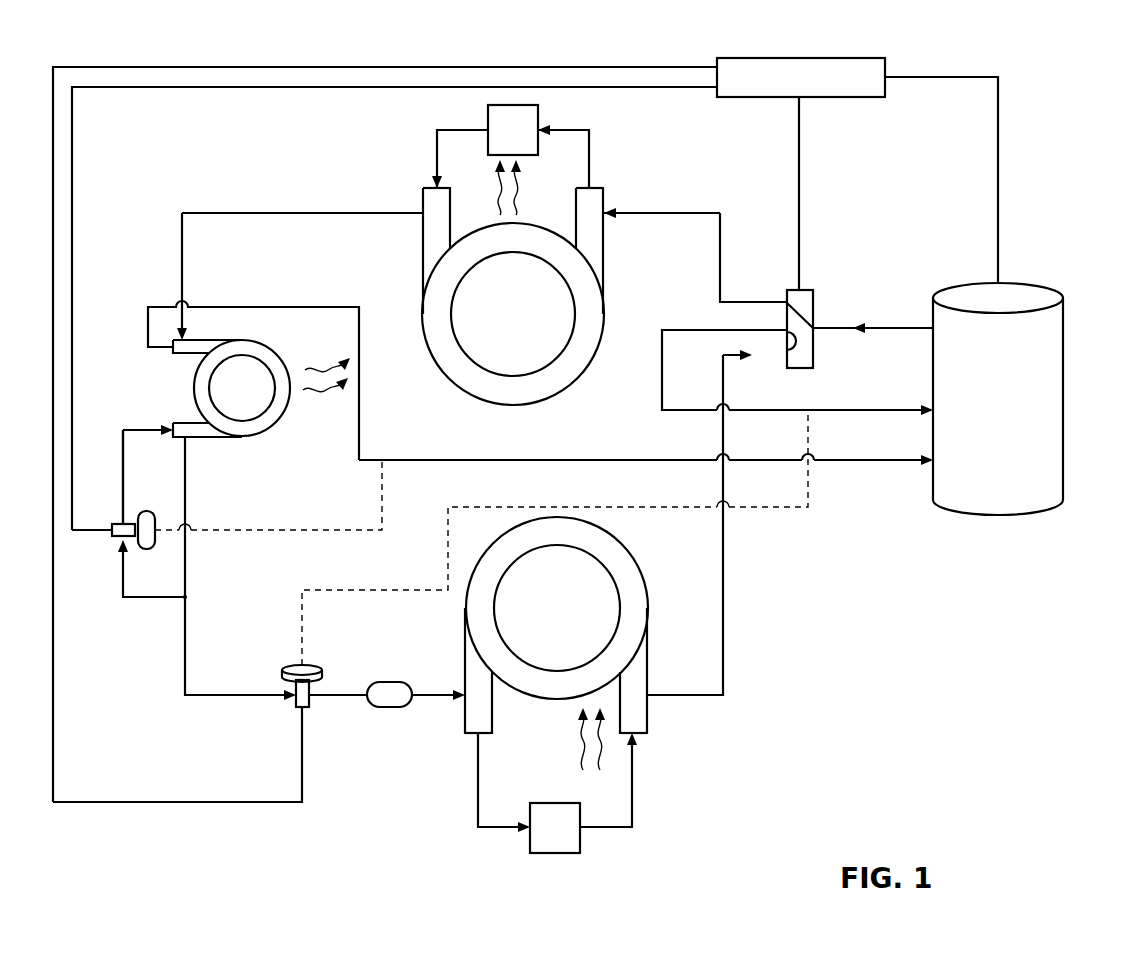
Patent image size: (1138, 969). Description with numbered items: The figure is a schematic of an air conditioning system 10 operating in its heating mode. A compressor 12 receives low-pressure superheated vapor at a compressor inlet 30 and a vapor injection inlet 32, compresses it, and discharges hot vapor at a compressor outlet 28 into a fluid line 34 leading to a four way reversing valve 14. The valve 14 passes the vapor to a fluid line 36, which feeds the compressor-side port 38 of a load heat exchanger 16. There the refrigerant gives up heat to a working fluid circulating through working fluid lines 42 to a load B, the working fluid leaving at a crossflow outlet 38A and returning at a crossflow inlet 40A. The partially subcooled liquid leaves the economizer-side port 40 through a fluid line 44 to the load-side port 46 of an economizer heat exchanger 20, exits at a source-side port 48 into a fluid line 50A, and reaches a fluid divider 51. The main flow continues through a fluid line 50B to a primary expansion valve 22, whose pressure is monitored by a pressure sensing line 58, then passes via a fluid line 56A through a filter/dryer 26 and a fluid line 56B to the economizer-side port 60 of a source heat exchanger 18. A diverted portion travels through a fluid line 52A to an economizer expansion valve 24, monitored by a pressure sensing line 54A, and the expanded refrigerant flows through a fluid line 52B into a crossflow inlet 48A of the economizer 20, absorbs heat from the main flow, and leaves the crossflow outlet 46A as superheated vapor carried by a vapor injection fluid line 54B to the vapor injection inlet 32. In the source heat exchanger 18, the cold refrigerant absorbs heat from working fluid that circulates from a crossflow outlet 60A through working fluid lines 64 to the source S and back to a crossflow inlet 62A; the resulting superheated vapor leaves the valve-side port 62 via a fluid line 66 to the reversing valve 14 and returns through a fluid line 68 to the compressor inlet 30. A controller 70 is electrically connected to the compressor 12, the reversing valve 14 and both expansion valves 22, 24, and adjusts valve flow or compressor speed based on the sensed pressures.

The air conditioning system 10 is at (1040, 75).
The compressor 12 is at (1060, 398).
The four way reversing valve 14 is at (805, 302).
The load heat exchanger 16 is at (604, 200).
The source heat exchanger 18 is at (560, 675).
The economizer heat exchanger 20 is at (250, 405).
The primary expansion valve 22 is at (300, 712).
The economizer expansion valve 24 is at (105, 537).
The filter/dryer 26 is at (392, 705).
The compressor outlet 28 is at (933, 336).
The compressor inlet 30 is at (933, 408).
The vapor injection inlet 32 is at (933, 466).
The fluid line 34 is at (890, 325).
The fluid line 36 is at (720, 238).
The compressor-side port 38 is at (606, 222).
The crossflow outlet 38A is at (590, 185).
The economizer-side port 40 is at (422, 215).
The crossflow inlet 40A is at (430, 188).
The working fluid lines 42 is at (572, 128).
The fluid line 44 is at (300, 213).
The load-side port 46 is at (186, 339).
The crossflow outlet 46A is at (173, 348).
The source-side port 48 is at (195, 440).
The crossflow inlet 48A is at (170, 440).
The fluid line 50A is at (190, 482).
The fluid line 50B is at (187, 640).
The fluid divider 51 is at (185, 600).
The fluid line 52A is at (140, 585).
The fluid line 52B is at (123, 465).
The pressure sensing line 54A is at (232, 540).
The vapor injection fluid line 54B is at (258, 307).
The fluid line 56A is at (345, 692).
The fluid line 56B is at (432, 692).
The pressure sensing line 58 is at (322, 590).
The economizer-side port 60 is at (463, 710).
The crossflow outlet 60A is at (478, 740).
The valve-side port 62 is at (647, 698).
The crossflow inlet 62A is at (640, 737).
The working fluid lines 64 is at (632, 810).
The fluid line 66 is at (725, 605).
The fluid line 68 is at (662, 350).
The controller 70 is at (834, 58).